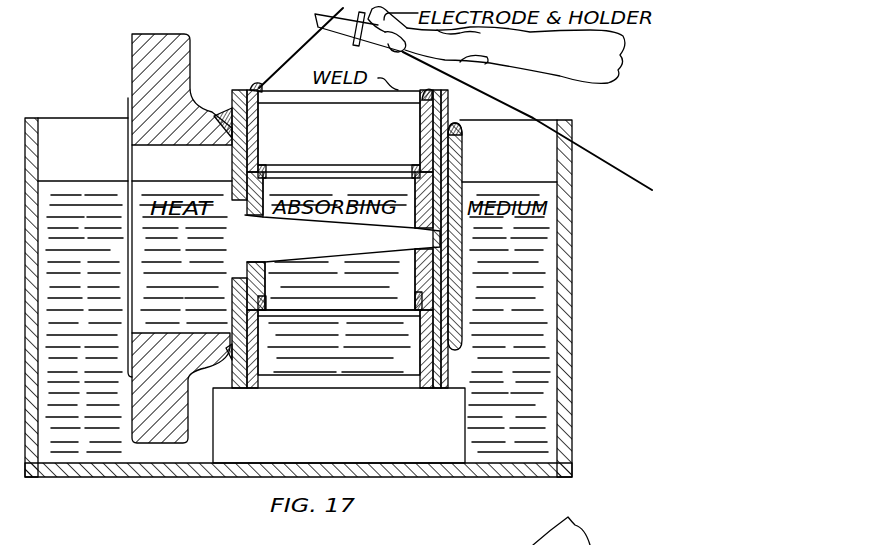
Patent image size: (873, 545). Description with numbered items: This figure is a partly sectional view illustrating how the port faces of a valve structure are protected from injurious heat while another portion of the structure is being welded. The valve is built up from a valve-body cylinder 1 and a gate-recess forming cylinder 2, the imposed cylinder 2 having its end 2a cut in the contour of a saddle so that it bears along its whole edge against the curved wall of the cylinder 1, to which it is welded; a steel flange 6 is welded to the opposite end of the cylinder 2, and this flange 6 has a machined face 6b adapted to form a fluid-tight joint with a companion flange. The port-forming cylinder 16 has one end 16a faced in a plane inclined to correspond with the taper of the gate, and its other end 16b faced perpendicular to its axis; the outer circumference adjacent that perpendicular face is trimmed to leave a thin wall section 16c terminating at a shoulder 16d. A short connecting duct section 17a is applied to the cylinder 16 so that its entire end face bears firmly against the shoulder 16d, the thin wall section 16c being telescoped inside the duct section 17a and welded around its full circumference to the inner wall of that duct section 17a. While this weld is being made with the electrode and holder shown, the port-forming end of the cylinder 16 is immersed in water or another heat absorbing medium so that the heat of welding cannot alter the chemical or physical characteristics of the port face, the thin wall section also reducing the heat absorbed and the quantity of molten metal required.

The valve-body cylinder 1 is at (448, 104).
The gate-recess forming cylinder 2 is at (181, 297).
The saddle-contoured end 2a is at (224, 128).
The steel flange 6 is at (132, 60).
The machined face 6b is at (128, 98).
The port-forming cylinder 16 is at (340, 235).
The inclined end face 16a is at (368, 250).
The perpendicular end face 16b is at (326, 163).
The thin wall section 16c is at (402, 170).
The shoulder 16d is at (458, 171).
The short connecting duct section 17a is at (339, 233).